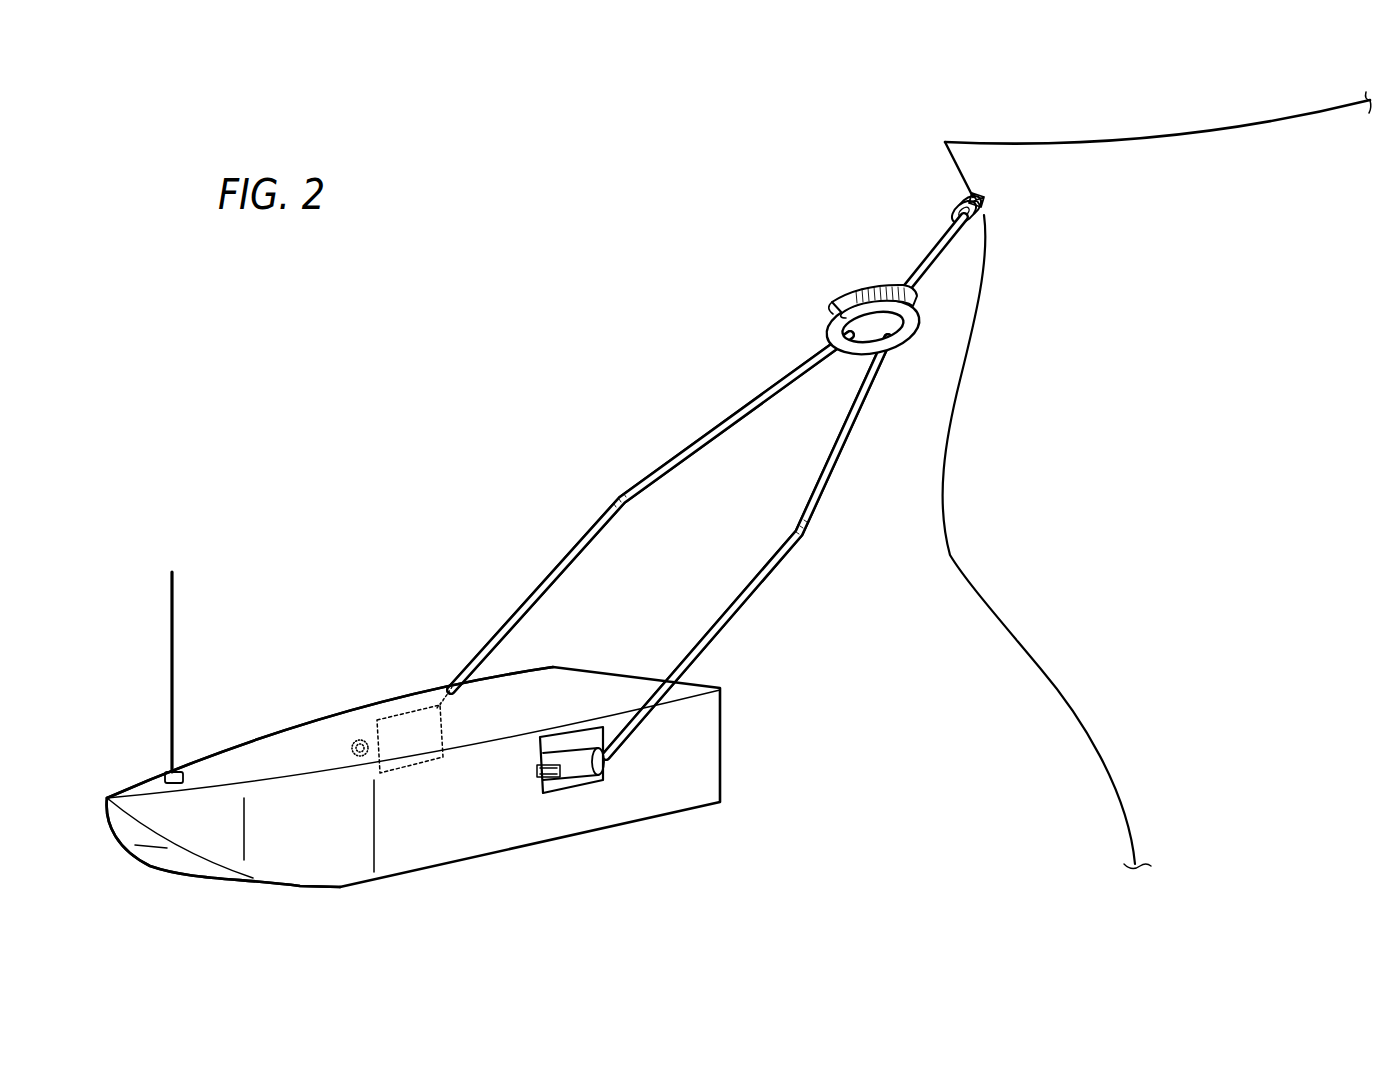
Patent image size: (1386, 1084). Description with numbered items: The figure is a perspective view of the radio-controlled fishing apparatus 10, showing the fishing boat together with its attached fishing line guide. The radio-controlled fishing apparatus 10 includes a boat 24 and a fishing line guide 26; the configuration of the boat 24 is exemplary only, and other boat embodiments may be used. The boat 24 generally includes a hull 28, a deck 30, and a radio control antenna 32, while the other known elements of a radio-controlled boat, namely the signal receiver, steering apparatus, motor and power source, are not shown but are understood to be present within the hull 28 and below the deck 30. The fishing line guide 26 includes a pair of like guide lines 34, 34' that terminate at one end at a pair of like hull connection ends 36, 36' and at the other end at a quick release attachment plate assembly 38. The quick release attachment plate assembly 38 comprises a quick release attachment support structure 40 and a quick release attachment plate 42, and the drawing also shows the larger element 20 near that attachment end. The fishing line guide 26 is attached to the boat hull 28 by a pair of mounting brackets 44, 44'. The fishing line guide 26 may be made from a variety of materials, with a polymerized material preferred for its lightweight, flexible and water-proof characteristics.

The radio-controlled fishing apparatus 10 is at (278, 513).
The boat hull 20 is at (1137, 138).
The boat 24 is at (305, 641).
The fishing line guide 26 is at (628, 462).
The hull 28 is at (357, 887).
The deck 30 is at (263, 753).
The radio control antenna 32 is at (172, 572).
The guide line 34 is at (747, 547).
The guide line 34' is at (650, 512).
The hull connection end 36 is at (639, 786).
The hull connection end 36' is at (414, 703).
The quick release attachment plate assembly 38 is at (840, 290).
The quick release attachment support structure 40 is at (930, 276).
The quick release attachment plate 42 is at (983, 200).
The mounting bracket 44 is at (590, 812).
The mounting bracket 44' is at (334, 712).